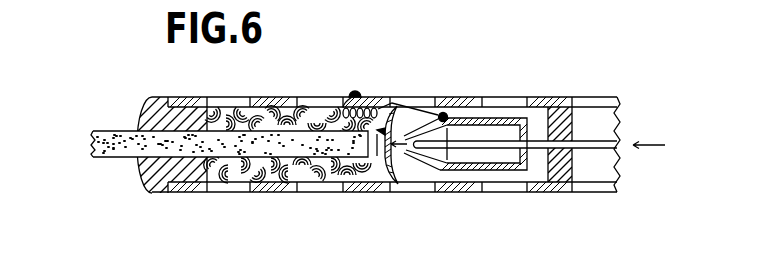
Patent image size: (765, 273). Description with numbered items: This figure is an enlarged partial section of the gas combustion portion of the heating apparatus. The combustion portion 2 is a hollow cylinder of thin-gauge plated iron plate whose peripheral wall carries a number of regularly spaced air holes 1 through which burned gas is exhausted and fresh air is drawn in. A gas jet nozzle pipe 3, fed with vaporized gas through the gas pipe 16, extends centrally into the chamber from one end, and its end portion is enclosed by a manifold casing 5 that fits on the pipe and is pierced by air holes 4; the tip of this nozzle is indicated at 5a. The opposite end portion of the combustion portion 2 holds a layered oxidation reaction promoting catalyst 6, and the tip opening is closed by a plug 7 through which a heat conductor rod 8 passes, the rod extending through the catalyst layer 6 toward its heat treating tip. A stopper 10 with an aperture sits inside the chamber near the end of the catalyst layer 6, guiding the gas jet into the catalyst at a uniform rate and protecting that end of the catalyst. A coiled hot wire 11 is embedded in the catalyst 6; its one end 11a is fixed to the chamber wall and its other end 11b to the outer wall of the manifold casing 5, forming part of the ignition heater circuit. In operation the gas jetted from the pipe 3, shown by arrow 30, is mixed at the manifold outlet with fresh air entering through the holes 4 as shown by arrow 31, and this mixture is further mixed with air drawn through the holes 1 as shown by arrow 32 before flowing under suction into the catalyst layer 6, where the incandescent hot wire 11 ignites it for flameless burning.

The air holes 1 is at (312, 102).
The combustion portion 2 is at (546, 98).
The gas jet nozzle pipe 3 is at (457, 149).
The air holes 4 is at (487, 120).
The manifold casing 5 is at (512, 168).
The tapered nozzle end 5a is at (400, 152).
The layered oxidation reaction promoting catalyst 6 is at (254, 103).
The plug 7 is at (158, 109).
The heat conductor rod 8 is at (122, 132).
The stopper 10 is at (398, 173).
The hot wire 11 is at (363, 112).
The end of hot wire 11a is at (344, 116).
The other end of hot wire 11b is at (439, 114).
The gas pipe 16 is at (597, 146).
The arrow 30 is at (401, 178).
The arrow 31 is at (446, 134).
The arrow 32 is at (419, 173).